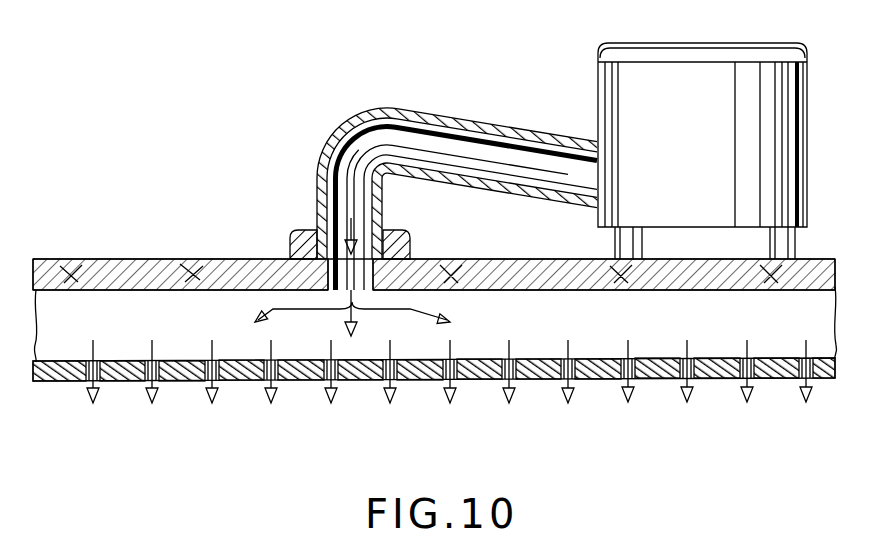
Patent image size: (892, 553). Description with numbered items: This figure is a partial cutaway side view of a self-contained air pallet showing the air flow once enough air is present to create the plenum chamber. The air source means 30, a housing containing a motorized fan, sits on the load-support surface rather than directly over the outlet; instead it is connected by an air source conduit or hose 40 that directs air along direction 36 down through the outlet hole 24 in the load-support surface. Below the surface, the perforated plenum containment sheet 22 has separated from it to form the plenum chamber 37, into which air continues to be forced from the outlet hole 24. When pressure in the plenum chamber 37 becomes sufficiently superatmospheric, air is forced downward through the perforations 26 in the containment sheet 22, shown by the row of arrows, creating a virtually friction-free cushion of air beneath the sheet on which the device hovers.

The perforated plenum containment sheet 22 is at (246, 382).
The outlet hole 24 is at (337, 273).
The perforations 26 is at (151, 392).
The air source means 30 is at (598, 74).
The direction of air flow 36 is at (367, 125).
The plenum chamber 37 is at (435, 324).
The air source conduit or hose 40 is at (437, 118).